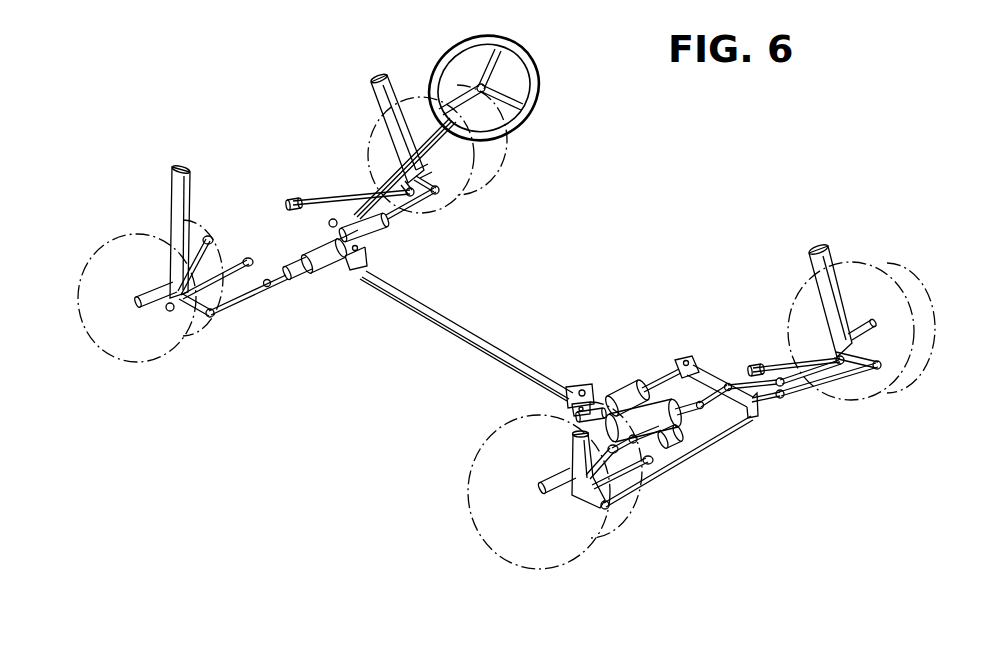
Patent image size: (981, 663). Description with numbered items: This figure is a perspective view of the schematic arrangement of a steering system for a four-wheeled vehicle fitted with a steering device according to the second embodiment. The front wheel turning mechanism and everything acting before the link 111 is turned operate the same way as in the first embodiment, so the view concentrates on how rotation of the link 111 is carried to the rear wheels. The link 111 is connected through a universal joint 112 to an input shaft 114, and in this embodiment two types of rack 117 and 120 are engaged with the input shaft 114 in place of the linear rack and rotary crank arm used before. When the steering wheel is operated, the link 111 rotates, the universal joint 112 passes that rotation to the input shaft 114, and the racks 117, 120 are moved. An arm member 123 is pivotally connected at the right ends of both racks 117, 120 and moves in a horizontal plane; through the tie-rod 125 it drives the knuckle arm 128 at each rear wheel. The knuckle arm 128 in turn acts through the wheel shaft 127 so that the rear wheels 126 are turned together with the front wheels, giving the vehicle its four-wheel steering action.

The link 111 is at (475, 341).
The universal joint 112 is at (580, 388).
The input shaft 114 is at (593, 392).
The rack 117 is at (663, 380).
The rack 120 is at (693, 424).
The arm member 123 is at (715, 373).
The tie-rod 125 is at (660, 473).
The rear wheel 126 is at (556, 556).
The wheel shaft 127 is at (552, 492).
The knuckle arm 128 is at (593, 500).